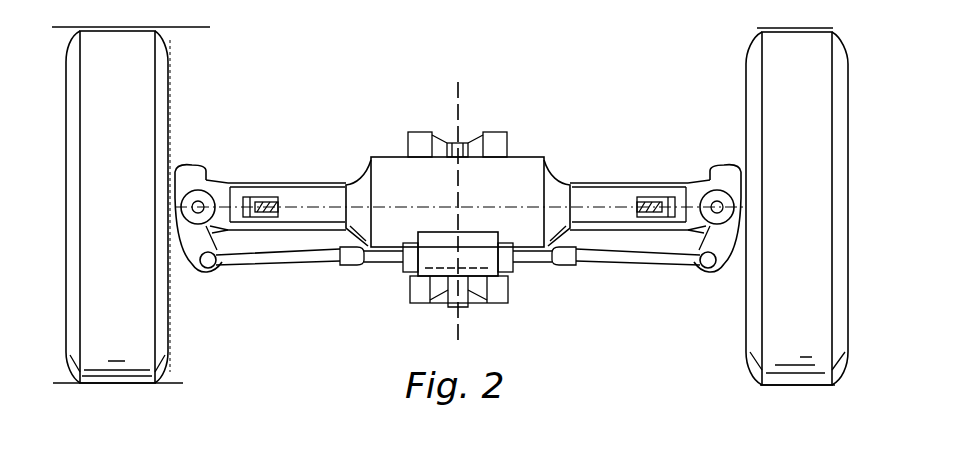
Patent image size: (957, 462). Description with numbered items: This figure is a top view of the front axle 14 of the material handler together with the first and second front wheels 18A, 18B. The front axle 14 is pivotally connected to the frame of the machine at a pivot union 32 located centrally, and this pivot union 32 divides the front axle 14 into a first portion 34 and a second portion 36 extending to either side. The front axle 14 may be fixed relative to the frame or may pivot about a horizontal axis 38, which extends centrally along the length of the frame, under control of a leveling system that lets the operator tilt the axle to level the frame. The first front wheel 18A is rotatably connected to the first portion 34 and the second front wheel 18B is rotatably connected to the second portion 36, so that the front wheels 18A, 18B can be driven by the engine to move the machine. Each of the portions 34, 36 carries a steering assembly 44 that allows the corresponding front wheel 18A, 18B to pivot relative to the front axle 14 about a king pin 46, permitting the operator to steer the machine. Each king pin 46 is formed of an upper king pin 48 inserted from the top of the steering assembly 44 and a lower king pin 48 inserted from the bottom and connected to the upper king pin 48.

The front axle 14 is at (527, 170).
The first front wheel 18A is at (756, 85).
The second front wheel 18B is at (163, 80).
The pivot union 32 is at (478, 288).
The first portion 34 is at (297, 190).
The second portion 36 is at (627, 192).
The horizontal axis 38 is at (463, 92).
The steering assembly 44 is at (209, 272).
The king pin 46 is at (183, 212).
The upper king pin / lower king pin 48 is at (201, 192).